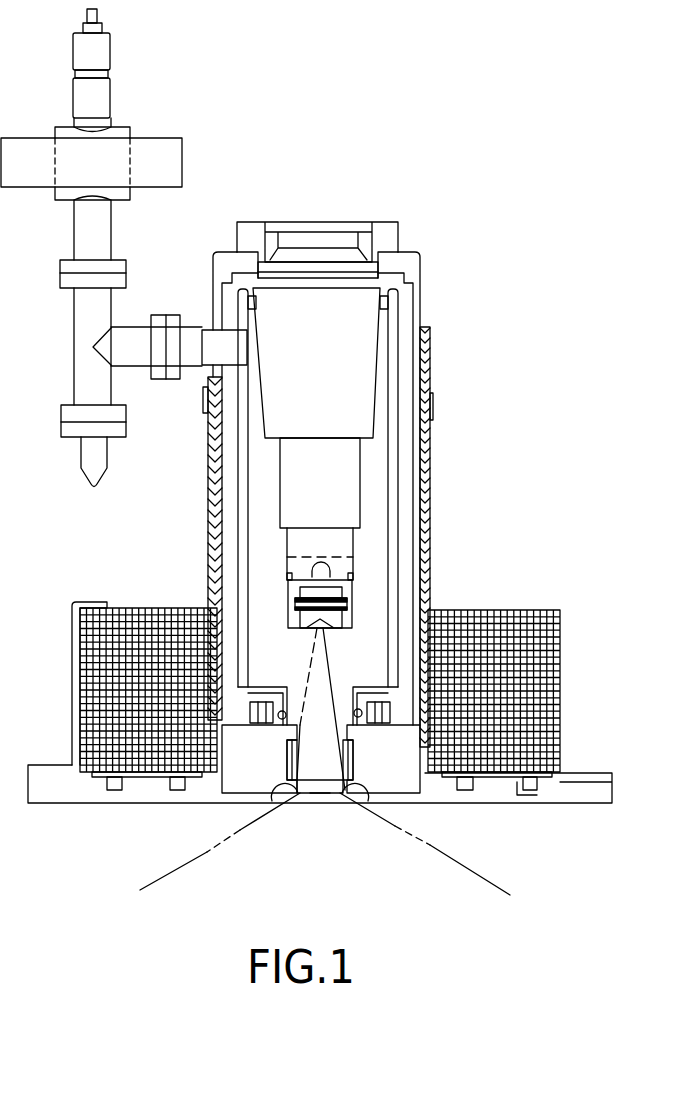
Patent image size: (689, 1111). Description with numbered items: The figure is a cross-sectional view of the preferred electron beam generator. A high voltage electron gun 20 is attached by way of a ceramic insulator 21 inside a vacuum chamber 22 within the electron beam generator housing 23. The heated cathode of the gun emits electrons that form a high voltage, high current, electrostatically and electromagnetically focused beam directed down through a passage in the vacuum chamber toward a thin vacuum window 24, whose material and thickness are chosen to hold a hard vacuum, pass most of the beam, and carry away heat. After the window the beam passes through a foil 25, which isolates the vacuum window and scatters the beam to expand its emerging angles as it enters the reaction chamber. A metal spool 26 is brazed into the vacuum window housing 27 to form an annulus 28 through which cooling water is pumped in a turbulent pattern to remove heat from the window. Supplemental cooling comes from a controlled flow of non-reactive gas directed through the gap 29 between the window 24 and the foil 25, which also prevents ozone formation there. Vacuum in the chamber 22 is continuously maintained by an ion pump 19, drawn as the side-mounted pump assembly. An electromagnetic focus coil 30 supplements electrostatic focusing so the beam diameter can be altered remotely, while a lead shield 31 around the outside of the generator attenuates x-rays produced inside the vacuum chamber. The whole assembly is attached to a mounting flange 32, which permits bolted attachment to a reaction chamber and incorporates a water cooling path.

The ion pump 19 is at (55, 200).
The high voltage electron gun 20 is at (352, 612).
The ceramic insulator 21 is at (373, 388).
The vacuum chamber 22 is at (394, 333).
The electron beam generator housing 23 is at (420, 286).
The vacuum window 24 is at (315, 794).
The foil 25 is at (339, 794).
The metal spool 26 is at (286, 785).
The vacuum window housing 27 is at (417, 787).
The annulus 28 is at (287, 753).
The gap 29 is at (323, 794).
The electromagnetic focus coil 30 is at (560, 610).
The lead shield 31 is at (433, 458).
The mounting flange 32 is at (612, 773).